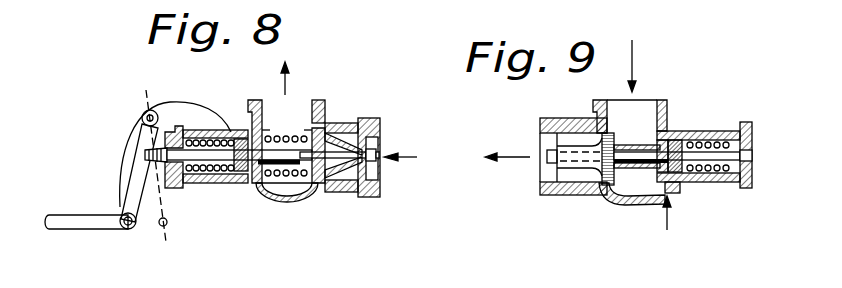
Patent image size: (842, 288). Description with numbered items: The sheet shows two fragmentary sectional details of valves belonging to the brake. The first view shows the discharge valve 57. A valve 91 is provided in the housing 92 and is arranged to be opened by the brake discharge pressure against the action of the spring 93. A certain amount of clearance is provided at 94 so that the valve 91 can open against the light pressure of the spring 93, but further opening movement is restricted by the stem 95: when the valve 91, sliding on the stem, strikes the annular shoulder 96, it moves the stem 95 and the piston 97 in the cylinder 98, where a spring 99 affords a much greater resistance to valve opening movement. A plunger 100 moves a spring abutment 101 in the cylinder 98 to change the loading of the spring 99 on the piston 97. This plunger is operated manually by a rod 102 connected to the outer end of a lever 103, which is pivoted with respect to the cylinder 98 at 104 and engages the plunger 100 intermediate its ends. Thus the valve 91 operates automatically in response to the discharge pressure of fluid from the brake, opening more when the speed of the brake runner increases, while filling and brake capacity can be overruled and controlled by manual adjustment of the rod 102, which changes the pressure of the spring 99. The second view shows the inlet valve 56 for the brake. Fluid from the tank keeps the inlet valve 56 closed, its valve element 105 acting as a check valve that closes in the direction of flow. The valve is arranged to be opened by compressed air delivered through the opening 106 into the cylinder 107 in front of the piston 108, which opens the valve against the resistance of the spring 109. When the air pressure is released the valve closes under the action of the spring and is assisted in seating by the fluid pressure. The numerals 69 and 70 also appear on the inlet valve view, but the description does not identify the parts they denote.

In FIG. 9, the inlet valve 56 is at (598, 192).
In FIG. 8, the discharge valve 57 is at (334, 115).
In FIG. 9, the inlet cap 69 is at (551, 118).
In FIG. 9, the inlet nozzle 70 is at (552, 194).
In FIG. 8, the valve 91 is at (318, 193).
In FIG. 8, the housing 92 is at (273, 203).
In FIG. 8, the spring 93 is at (292, 177).
In FIG. 8, the clearance 94 is at (300, 130).
In FIG. 8, the stem 95 is at (262, 176).
In FIG. 8, the annular shoulder 96 is at (290, 128).
In FIG. 8, the piston 97 is at (238, 128).
In FIG. 8, the cylinder 98 is at (195, 188).
In FIG. 8, the spring 99 is at (220, 184).
In FIG. 8, the plunger 100 is at (145, 152).
In FIG. 8, the spring abutment 101 is at (200, 100).
In FIG. 8, the rod 102 is at (83, 230).
In FIG. 8, the lever 103 is at (128, 193).
In FIG. 8, the pivot 104 is at (147, 109).
In FIG. 9, the valve element 105 is at (614, 132).
In FIG. 9, the opening 106 is at (676, 200).
In FIG. 9, the cylinder 107 is at (713, 185).
In FIG. 9, the piston 108 is at (676, 139).
In FIG. 9, the spring 109 is at (722, 173).